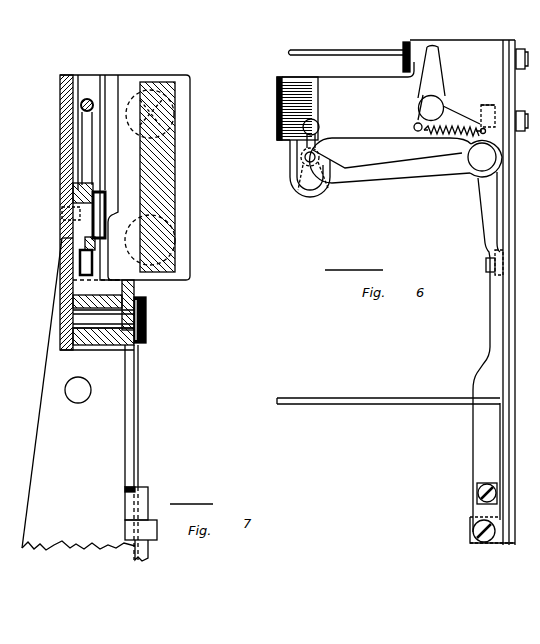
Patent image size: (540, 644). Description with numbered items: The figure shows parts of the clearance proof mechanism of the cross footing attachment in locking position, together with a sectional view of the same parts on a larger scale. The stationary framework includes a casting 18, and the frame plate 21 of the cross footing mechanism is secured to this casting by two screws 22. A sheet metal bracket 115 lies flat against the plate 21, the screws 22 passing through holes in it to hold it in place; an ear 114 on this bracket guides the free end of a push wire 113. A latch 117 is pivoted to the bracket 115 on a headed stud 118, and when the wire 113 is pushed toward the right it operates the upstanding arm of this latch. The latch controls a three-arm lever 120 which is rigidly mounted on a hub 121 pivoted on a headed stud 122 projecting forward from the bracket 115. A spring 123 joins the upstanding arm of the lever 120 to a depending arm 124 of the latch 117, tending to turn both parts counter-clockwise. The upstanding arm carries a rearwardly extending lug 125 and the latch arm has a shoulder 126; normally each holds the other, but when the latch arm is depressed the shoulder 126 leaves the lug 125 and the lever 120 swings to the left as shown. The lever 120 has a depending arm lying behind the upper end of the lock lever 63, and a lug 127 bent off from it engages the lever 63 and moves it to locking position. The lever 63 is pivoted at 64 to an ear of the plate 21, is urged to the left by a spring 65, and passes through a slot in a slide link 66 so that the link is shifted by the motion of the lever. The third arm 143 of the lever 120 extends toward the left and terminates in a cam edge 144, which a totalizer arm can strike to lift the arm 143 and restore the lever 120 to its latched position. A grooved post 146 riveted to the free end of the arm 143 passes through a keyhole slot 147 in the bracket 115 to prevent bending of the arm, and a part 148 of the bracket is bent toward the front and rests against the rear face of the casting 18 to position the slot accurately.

In FIG. 7, the casting 18 is at (172, 179).
In FIG. 7, the frame plate 21 is at (37, 414).
In FIG. 6, the frame plate 21 is at (515, 192).
In FIG. 7, the screws 22 is at (148, 177).
In FIG. 6, the screws 22 is at (528, 91).
In FIG. 7, the lever 63 is at (148, 500).
In FIG. 6, the lever 63 is at (492, 338).
In FIG. 6, the pivot 64 is at (473, 533).
In FIG. 6, the spring 65 is at (482, 437).
In FIG. 6, the slide link 66 is at (449, 401).
In FIG. 7, the push wire 113 is at (87, 99).
In FIG. 6, the push wire 113 is at (338, 50).
In FIG. 6, the ear 114 is at (403, 46).
In FIG. 7, the sheet metal bracket 115 is at (60, 131).
In FIG. 6, the sheet metal bracket 115 is at (464, 40).
In FIG. 7, the latch 117 is at (88, 160).
In FIG. 6, the latch 117 is at (440, 90).
In FIG. 7, the headed stud 118 is at (75, 222).
In FIG. 6, the headed stud 118 is at (420, 108).
In FIG. 7, the three-arm lever 120 is at (130, 377).
In FIG. 6, the three-arm lever 120 is at (406, 168).
In FIG. 7, the hub 121 is at (113, 342).
In FIG. 7, the headed stud 122 is at (146, 318).
In FIG. 6, the headed stud 122 is at (482, 157).
In FIG. 6, the spring 123 is at (454, 138).
In FIG. 7, the depending arm 124 is at (85, 262).
In FIG. 6, the depending arm 124 is at (414, 127).
In FIG. 7, the lug 125 is at (62, 212).
In FIG. 6, the lug 125 is at (491, 104).
In FIG. 6, the shoulder 126 is at (463, 115).
In FIG. 7, the lug 127 is at (152, 528).
In FIG. 6, the lug 127 is at (486, 263).
In FIG. 6, the third arm 143 is at (400, 178).
In FIG. 6, the cam edge 144 is at (331, 188).
In FIG. 6, the post 146 is at (300, 197).
In FIG. 6, the keyhole slot 147 is at (319, 129).
In FIG. 6, the part 148 is at (277, 112).